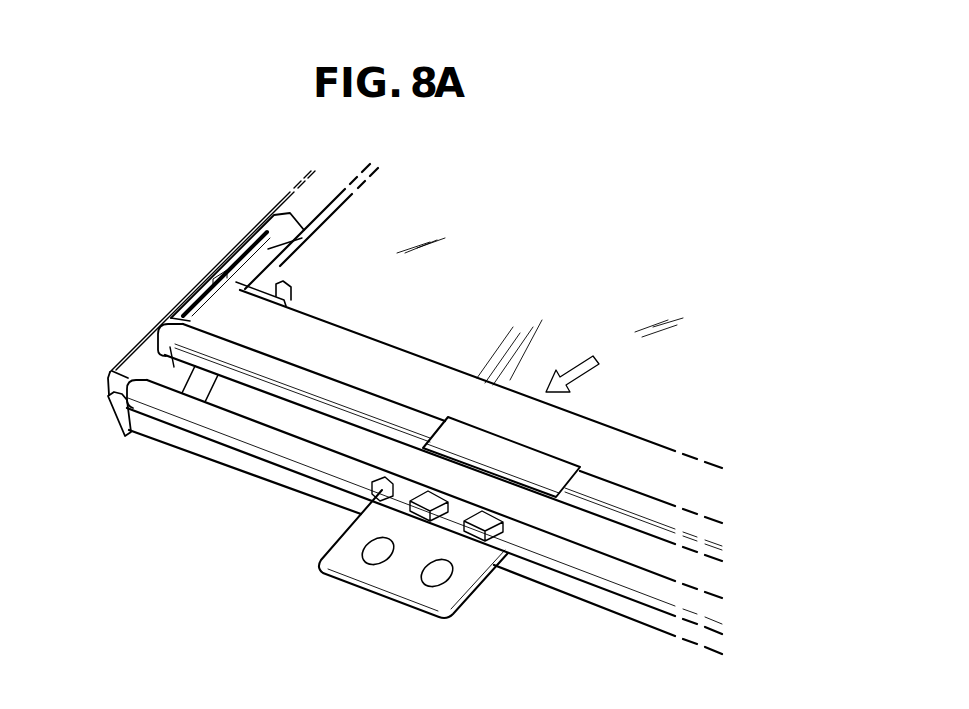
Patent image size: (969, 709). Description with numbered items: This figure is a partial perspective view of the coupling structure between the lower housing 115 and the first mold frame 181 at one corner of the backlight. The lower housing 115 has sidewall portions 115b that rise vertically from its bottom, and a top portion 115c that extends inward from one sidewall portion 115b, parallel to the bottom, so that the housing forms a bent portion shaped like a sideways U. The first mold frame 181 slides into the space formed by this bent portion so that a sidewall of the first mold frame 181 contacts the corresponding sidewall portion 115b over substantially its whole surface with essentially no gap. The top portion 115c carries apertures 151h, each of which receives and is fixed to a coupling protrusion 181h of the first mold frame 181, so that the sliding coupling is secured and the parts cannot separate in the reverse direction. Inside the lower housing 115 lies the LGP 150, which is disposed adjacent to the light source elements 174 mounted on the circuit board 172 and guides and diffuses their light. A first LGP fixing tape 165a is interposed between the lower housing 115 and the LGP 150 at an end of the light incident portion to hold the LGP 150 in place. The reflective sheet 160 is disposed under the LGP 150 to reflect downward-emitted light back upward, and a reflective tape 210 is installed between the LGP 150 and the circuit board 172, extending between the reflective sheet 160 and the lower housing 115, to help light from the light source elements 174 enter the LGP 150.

The lower housing 115 is at (162, 265).
The sidewall portion 115b is at (153, 423).
The top portion 115c is at (220, 418).
The LGP 150 is at (323, 246).
The aperture 151h is at (410, 470).
The reflective sheet 160 is at (275, 214).
The first LGP fixing tape 165a is at (175, 385).
The circuit board 172 is at (392, 501).
The light source element 174 is at (406, 500).
The first mold frame 181 is at (642, 465).
The coupling protrusion 181h is at (545, 476).
The reflective tape 210 is at (305, 378).